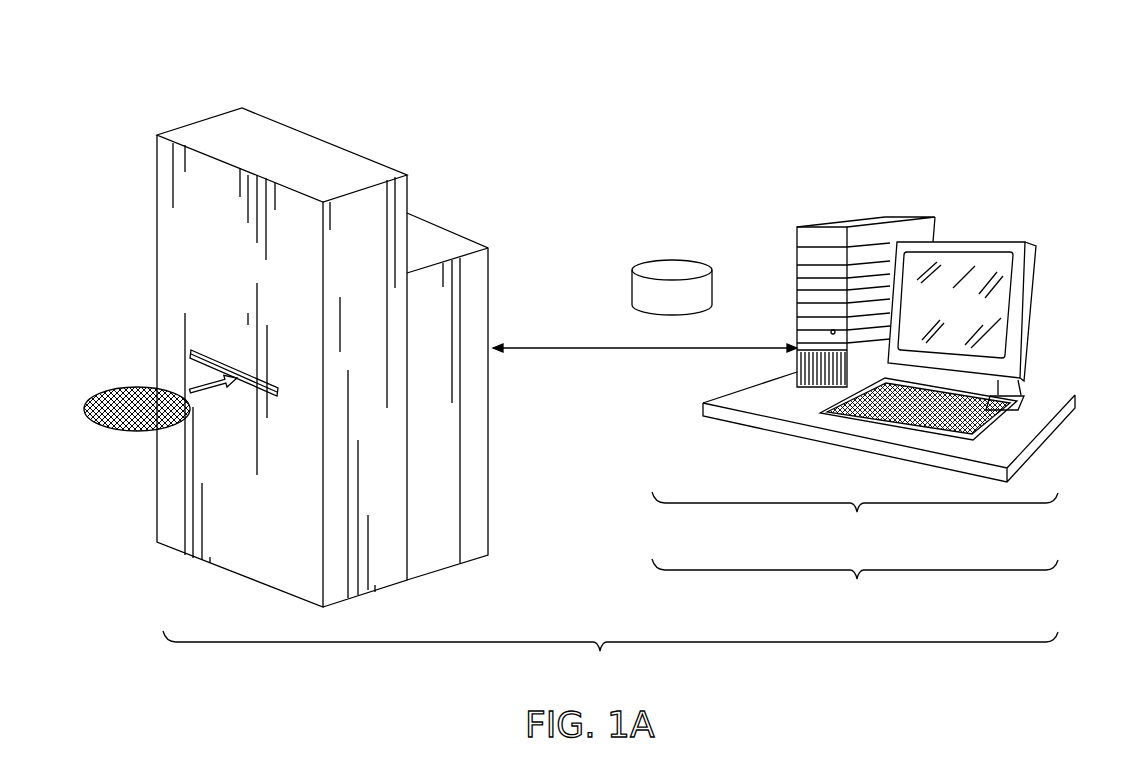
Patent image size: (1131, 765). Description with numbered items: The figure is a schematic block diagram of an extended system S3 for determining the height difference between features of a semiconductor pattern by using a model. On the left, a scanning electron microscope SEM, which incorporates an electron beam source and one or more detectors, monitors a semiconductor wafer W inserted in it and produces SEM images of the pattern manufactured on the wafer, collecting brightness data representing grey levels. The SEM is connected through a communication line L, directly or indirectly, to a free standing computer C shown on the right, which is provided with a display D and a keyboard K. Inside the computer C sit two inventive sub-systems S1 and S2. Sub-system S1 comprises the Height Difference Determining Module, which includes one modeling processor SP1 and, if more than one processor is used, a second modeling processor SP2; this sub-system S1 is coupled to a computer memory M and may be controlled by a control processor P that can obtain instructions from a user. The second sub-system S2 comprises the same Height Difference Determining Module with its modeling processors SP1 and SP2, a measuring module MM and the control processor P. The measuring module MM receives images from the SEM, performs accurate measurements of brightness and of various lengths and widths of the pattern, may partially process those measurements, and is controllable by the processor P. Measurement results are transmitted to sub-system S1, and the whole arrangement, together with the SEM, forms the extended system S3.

The scanning electron microscope SEM is at (197, 118).
The semiconductor wafer W is at (102, 390).
The communication line L is at (630, 355).
The computer memory M is at (675, 260).
The computer C is at (850, 218).
The control processor P is at (797, 267).
The modeling processor SP1 is at (797, 303).
The modeling processor SP2 is at (797, 328).
The measuring module MM is at (797, 360).
The display D is at (965, 240).
The keyboard K is at (1020, 412).
The sub-system S1 is at (855, 518).
The sub-system S2 is at (855, 586).
The extended system S3 is at (540, 84).